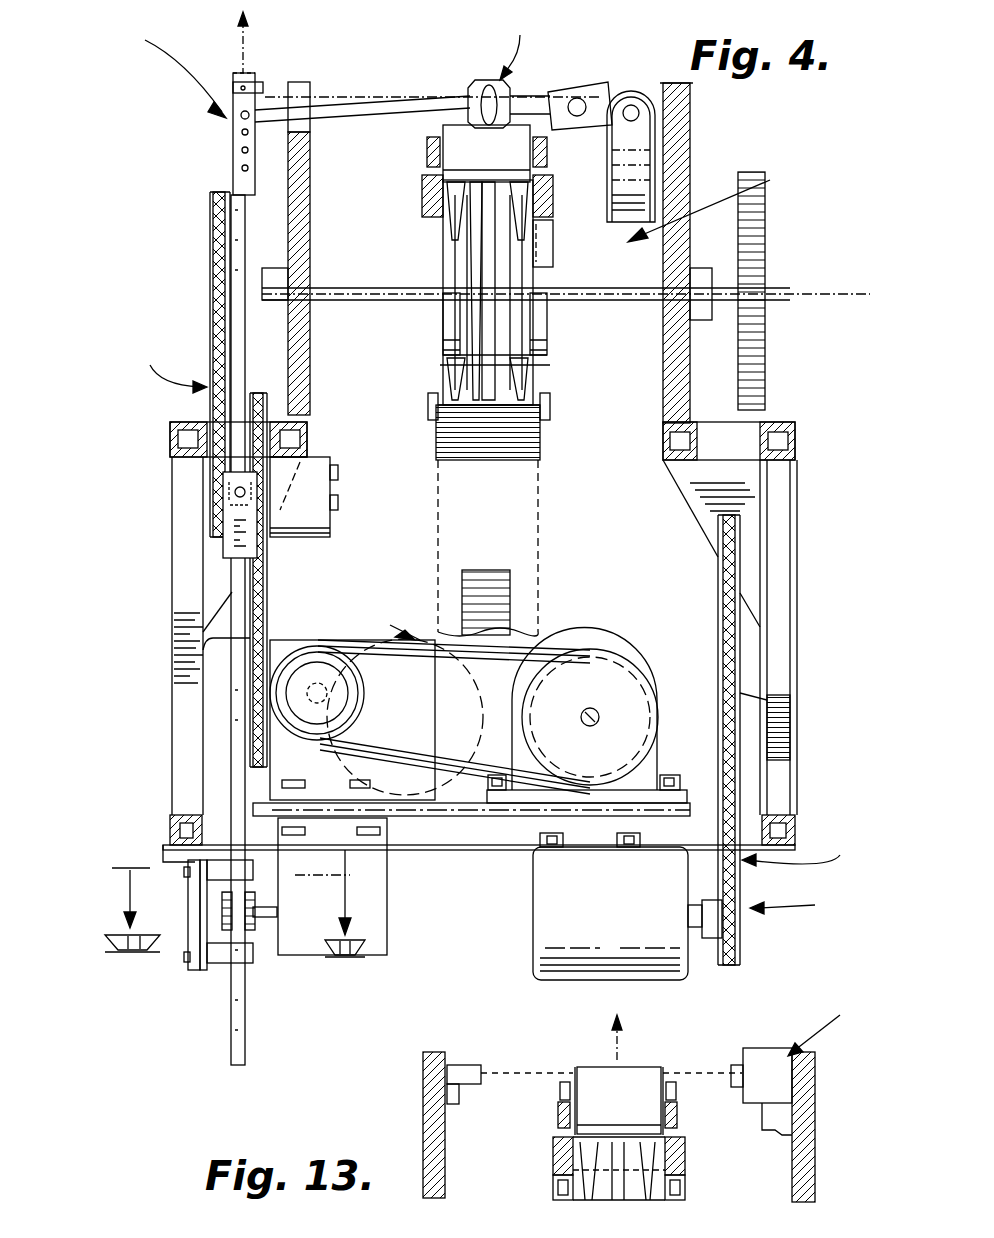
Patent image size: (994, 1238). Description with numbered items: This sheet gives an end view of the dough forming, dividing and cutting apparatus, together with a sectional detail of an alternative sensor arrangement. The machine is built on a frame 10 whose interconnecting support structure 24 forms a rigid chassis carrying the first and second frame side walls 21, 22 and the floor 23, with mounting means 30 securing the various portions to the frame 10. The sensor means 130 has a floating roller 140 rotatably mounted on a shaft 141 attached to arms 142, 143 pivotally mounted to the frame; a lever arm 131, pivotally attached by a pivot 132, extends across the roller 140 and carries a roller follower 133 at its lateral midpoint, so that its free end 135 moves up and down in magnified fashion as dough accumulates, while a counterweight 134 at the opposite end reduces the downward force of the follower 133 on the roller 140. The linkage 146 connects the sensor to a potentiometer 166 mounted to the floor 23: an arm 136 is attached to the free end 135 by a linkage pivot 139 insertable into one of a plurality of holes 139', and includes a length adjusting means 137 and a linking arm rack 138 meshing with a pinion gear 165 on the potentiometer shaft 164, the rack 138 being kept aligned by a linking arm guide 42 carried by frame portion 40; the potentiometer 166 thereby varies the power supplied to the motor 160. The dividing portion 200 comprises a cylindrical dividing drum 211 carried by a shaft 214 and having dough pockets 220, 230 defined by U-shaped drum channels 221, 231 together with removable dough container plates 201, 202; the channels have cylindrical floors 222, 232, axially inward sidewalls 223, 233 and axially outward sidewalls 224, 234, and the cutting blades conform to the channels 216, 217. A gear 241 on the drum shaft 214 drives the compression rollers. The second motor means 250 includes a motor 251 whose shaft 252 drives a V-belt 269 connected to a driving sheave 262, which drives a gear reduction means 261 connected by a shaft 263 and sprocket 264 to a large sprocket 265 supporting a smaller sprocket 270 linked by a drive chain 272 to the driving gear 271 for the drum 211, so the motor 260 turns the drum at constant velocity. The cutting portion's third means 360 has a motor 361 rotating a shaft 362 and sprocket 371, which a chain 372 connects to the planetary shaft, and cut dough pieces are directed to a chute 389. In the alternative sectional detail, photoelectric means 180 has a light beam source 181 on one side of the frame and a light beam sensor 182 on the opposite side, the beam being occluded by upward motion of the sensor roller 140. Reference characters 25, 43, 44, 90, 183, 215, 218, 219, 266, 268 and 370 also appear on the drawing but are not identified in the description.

In FIG. 4, the frame 10 is at (797, 635).
In FIG. 4, the first frame side wall 21 is at (690, 105).
In FIG. 13, the first frame side wall 21 is at (800, 1175).
In FIG. 4, the second frame side wall 22 is at (290, 350).
In FIG. 13, the second frame side wall 22 is at (423, 1127).
In FIG. 4, the floor 23 is at (485, 816).
In FIG. 4, the interconnecting support structure 24 is at (170, 438).
In FIG. 4, the top plate 25 is at (663, 83).
In FIG. 4, the mounting means 30 is at (395, 835).
In FIG. 4, the frame portion 40 is at (160, 846).
In FIG. 4, the linking arm guide 42 is at (200, 895).
In FIG. 4, the sprocket 43 is at (225, 958).
In FIG. 4, the vertical bar 44 is at (246, 985).
In FIG. 13, the direction of movement 90 is at (617, 1040).
In FIG. 4, the sensor means 130 is at (519, 41).
In FIG. 4, the lever arm 131 is at (365, 100).
In FIG. 4, the pivot 132 is at (578, 98).
In FIG. 4, the roller follower 133 is at (485, 80).
In FIG. 4, the counterweight 134 is at (645, 165).
In FIG. 4, the free end 135 is at (270, 108).
In FIG. 4, the arm 136 is at (233, 133).
In FIG. 4, the length adjusting means 137 is at (255, 548).
In FIG. 4, the linking arm rack 138 is at (230, 1020).
In FIG. 4, the linkage pivot 139 is at (226, 79).
In FIG. 4, the holes 139' is at (194, 171).
In FIG. 4, the floating roller 140 is at (486, 153).
In FIG. 13, the floating roller 140 is at (648, 1095).
In FIG. 13, the shaft 141 is at (585, 1110).
In FIG. 4, the arm 142 is at (548, 150).
In FIG. 13, the arm 142 is at (678, 1115).
In FIG. 4, the arm 143 is at (426, 150).
In FIG. 13, the arm 143 is at (558, 1115).
In FIG. 4, the linkage 146 is at (170, 67).
In FIG. 4, the motor 160 is at (450, 580).
In FIG. 4, the potentiometer shaft 164 is at (280, 917).
In FIG. 4, the pinion gear 165 is at (262, 900).
In FIG. 4, the potentiometer 166 is at (387, 925).
In FIG. 13, the photoelectric means 180 is at (823, 1024).
In FIG. 13, the light beam source 181 is at (462, 1065).
In FIG. 13, the light beam sensor 182 is at (775, 1080).
In FIG. 13, the axis line 183 is at (496, 1068).
In FIG. 4, the dividing portion 200 is at (723, 200).
In FIG. 4, the dough container plate 201 is at (553, 188).
In FIG. 4, the dough container plate 202 is at (422, 185).
In FIG. 4, the dividing drum 211 is at (520, 338).
In FIG. 13, the dividing drum 211 is at (640, 1182).
In FIG. 4, the drum shaft 214 is at (742, 275).
In FIG. 4, the shaft bearing 215 is at (700, 320).
In FIG. 4, the channel 216 is at (308, 300).
In FIG. 4, the channel 217 is at (828, 300).
In FIG. 4, the wedge 218 is at (458, 205).
In FIG. 4, the housing 219 is at (495, 400).
In FIG. 4, the first dough pocket 220 is at (545, 405).
In FIG. 13, the first dough pocket 220 is at (640, 1152).
In FIG. 4, the U-shaped drum channel 221 is at (515, 300).
In FIG. 4, the cylindrical floor 222 is at (553, 250).
In FIG. 4, the axially inward sidewall 223 is at (520, 230).
In FIG. 4, the axially outward sidewall 224 is at (530, 376).
In FIG. 4, the second dough pocket 230 is at (445, 405).
In FIG. 13, the second dough pocket 230 is at (585, 1152).
In FIG. 4, the U-shaped drum channel 231 is at (460, 320).
In FIG. 4, the cylindrical floor 232 is at (482, 268).
In FIG. 4, the axially inward sidewall 233 is at (478, 236).
In FIG. 4, the axially outward sidewall 234 is at (455, 345).
In FIG. 4, the gear 241 is at (765, 380).
In FIG. 4, the second motor means 250 is at (612, 650).
In FIG. 4, the motor 251 is at (620, 695).
In FIG. 4, the motor shaft 252 is at (581, 732).
In FIG. 4, the motor 260 is at (159, 371).
In FIG. 4, the gear reduction means 261 is at (172, 655).
In FIG. 4, the driving sheave 262 is at (310, 675).
In FIG. 4, the shaft 263 is at (280, 760).
In FIG. 4, the sprocket 264 is at (253, 735).
In FIG. 4, the large sprocket 265 is at (268, 415).
In FIG. 4, the support plate 266 is at (305, 490).
In FIG. 4, the mounting tabs 268 is at (300, 520).
In FIG. 4, the V-belt 269 is at (545, 640).
In FIG. 4, the smaller sprocket 270 is at (223, 508).
In FIG. 4, the driving gear 271 is at (210, 233).
In FIG. 4, the drive chain 272 is at (230, 292).
In FIG. 4, the third means 360 is at (804, 900).
In FIG. 4, the motor 361 is at (560, 920).
In FIG. 4, the shaft 362 is at (688, 915).
In FIG. 4, the right rail unit 370 is at (800, 842).
In FIG. 4, the sprocket 371 is at (740, 945).
In FIG. 4, the chain 372 is at (770, 700).
In FIG. 4, the chute 389 is at (540, 510).